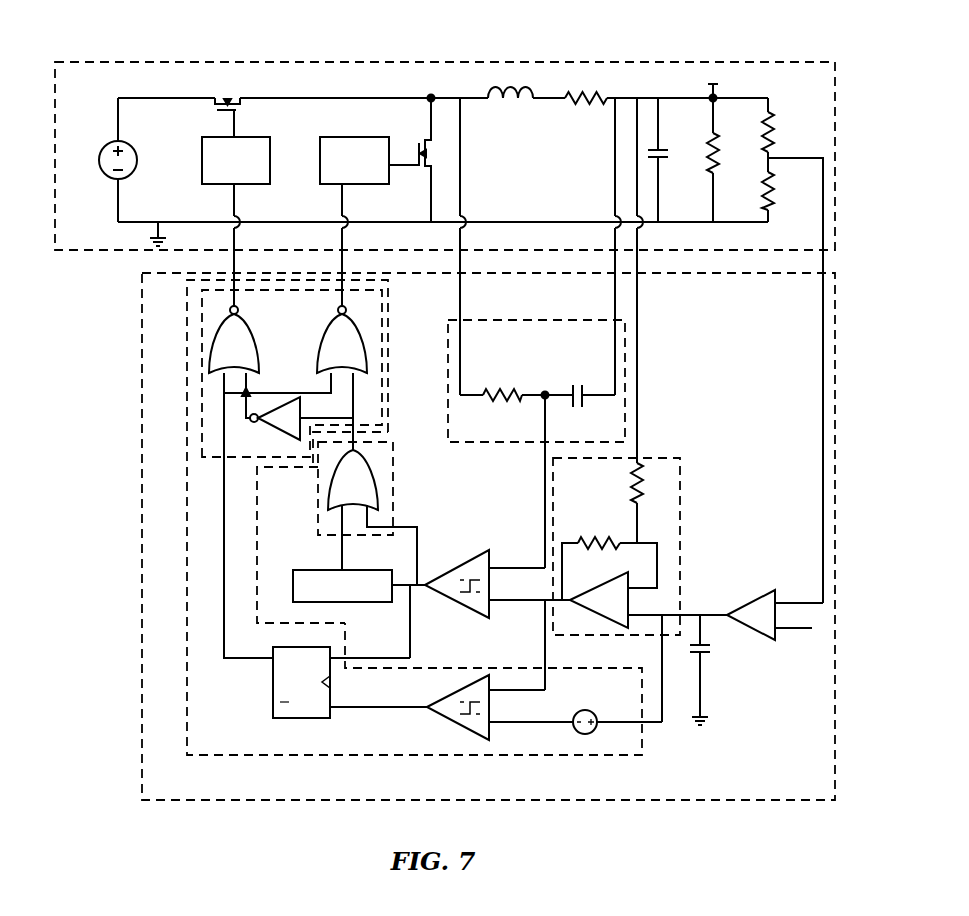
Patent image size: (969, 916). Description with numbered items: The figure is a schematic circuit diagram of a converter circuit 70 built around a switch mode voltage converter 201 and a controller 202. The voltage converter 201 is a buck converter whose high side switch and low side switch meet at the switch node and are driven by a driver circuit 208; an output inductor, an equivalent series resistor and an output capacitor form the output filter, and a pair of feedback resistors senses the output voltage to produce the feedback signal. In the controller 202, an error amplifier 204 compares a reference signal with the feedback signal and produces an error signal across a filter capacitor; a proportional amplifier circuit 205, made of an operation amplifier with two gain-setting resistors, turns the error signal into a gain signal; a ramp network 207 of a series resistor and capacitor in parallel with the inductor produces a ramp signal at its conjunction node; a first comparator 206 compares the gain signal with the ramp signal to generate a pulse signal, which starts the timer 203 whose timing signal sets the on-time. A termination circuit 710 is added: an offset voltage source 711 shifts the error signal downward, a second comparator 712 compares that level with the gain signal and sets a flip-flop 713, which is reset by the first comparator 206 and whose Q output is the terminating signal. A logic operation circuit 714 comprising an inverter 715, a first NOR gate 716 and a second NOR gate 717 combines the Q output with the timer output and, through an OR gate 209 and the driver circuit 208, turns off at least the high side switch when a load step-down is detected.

The converter circuit 70 is at (531, 28).
The voltage converter 201 is at (347, 58).
The controller 202 is at (142, 419).
The timer 203 is at (359, 603).
The error amplifier 204 is at (754, 630).
The proportional amplifier circuit 205 is at (681, 524).
The first comparator 206 is at (460, 563).
The ramp network 207 is at (502, 444).
The driver circuit 208 is at (270, 165).
The OR gate 209 is at (394, 487).
The termination circuit 710 is at (246, 755).
The offset voltage source 711 is at (590, 734).
The second comparator 712 is at (463, 730).
The flip-flop 713 is at (273, 686).
The logic operation circuit 714 is at (388, 314).
The inverter 715 is at (268, 435).
The first NOR gate 716 is at (320, 346).
The second NOR gate 717 is at (259, 337).